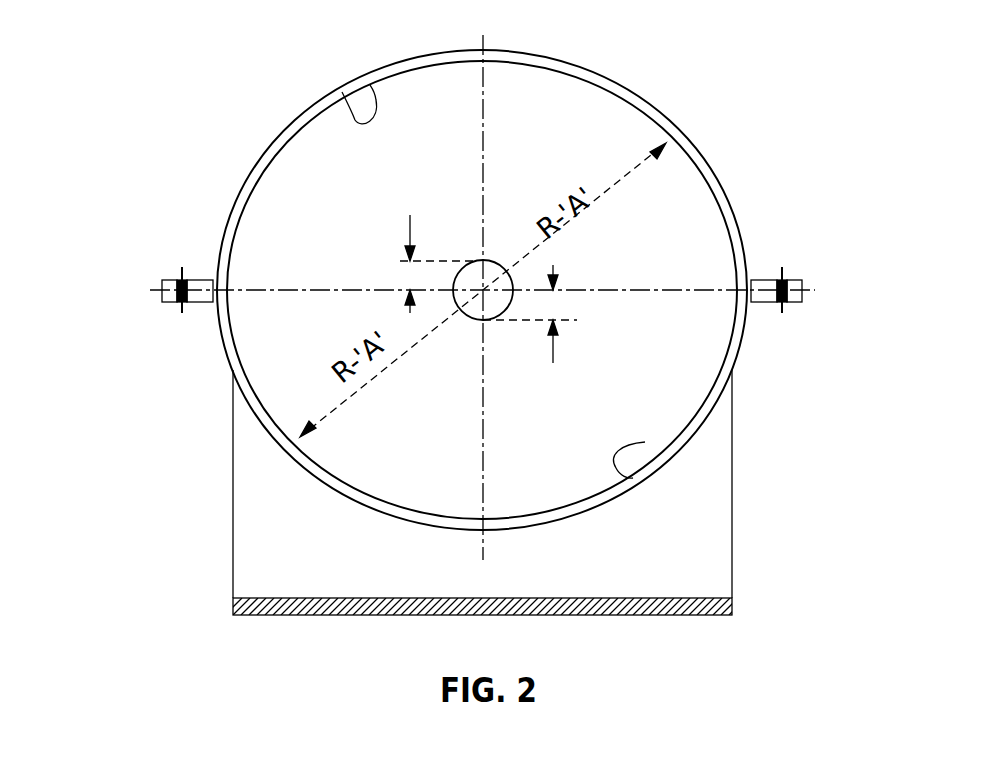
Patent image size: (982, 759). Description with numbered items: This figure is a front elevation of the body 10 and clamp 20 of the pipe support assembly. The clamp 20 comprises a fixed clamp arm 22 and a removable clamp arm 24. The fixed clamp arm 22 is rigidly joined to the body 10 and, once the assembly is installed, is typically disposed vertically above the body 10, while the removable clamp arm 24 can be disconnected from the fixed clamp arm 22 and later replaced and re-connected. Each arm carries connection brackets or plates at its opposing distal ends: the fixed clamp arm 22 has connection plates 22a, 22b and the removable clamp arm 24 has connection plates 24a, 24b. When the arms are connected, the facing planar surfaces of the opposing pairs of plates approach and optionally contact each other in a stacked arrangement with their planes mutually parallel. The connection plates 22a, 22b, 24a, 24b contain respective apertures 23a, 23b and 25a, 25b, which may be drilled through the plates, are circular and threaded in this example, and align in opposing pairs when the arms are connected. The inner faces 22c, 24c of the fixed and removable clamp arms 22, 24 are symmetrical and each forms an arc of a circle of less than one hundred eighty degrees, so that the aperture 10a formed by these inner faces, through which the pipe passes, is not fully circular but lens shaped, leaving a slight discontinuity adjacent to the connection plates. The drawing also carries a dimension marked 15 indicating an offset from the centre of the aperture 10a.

The body 10 is at (732, 575).
The aperture 10a is at (683, 245).
The offset dimension 15 is at (477, 288).
The clamp 20 is at (291, 112).
The fixed clamp arm 22 is at (713, 392).
The connection plate 22a is at (171, 301).
The connection plate 22b is at (793, 301).
The inner face 22c is at (645, 442).
The aperture 23a is at (185, 305).
The aperture 23b is at (779, 305).
The removable clamp arm 24 is at (267, 155).
The connection plate 24a is at (171, 281).
The connection plate 24b is at (793, 281).
The inner face 24c is at (342, 92).
The aperture 25a is at (185, 276).
The aperture 25b is at (779, 276).